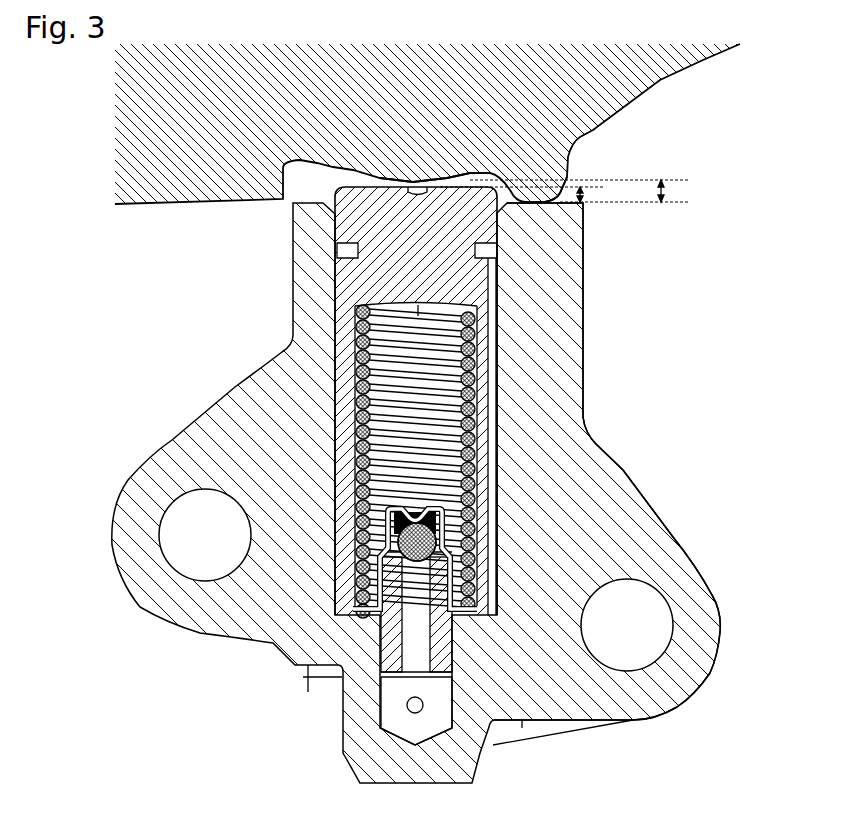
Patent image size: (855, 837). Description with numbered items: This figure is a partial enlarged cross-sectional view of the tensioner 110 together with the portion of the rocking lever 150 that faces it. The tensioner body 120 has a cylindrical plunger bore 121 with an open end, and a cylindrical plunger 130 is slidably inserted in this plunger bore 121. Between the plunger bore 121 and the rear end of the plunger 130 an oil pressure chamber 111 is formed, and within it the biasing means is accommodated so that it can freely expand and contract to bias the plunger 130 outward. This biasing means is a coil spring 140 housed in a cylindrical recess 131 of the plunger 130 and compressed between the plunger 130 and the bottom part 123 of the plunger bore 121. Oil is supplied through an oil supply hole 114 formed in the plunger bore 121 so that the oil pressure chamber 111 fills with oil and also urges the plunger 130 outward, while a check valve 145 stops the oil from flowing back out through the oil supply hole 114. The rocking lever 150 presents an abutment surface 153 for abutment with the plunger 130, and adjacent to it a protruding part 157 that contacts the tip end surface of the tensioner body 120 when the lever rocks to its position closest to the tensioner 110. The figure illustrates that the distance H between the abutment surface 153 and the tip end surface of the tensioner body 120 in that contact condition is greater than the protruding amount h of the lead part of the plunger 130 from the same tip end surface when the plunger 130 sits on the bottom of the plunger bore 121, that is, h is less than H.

The tensioner 110 is at (293, 262).
The oil pressure chamber 111 is at (443, 427).
The oil supply hole 114 is at (493, 747).
The tensioner body 120 is at (540, 363).
The plunger bore 121 is at (487, 315).
The bottom part 123 is at (352, 607).
The plunger 130 is at (480, 227).
The cylindrical recess 131 is at (356, 333).
The coil spring 140 is at (355, 440).
The check valve 145 is at (413, 563).
The rocking lever 150 is at (693, 66).
The abutment surface 153 is at (407, 194).
The protruding part 157 is at (568, 175).
The distance (protruding height) H is at (668, 195).
The protruding amount h is at (584, 196).